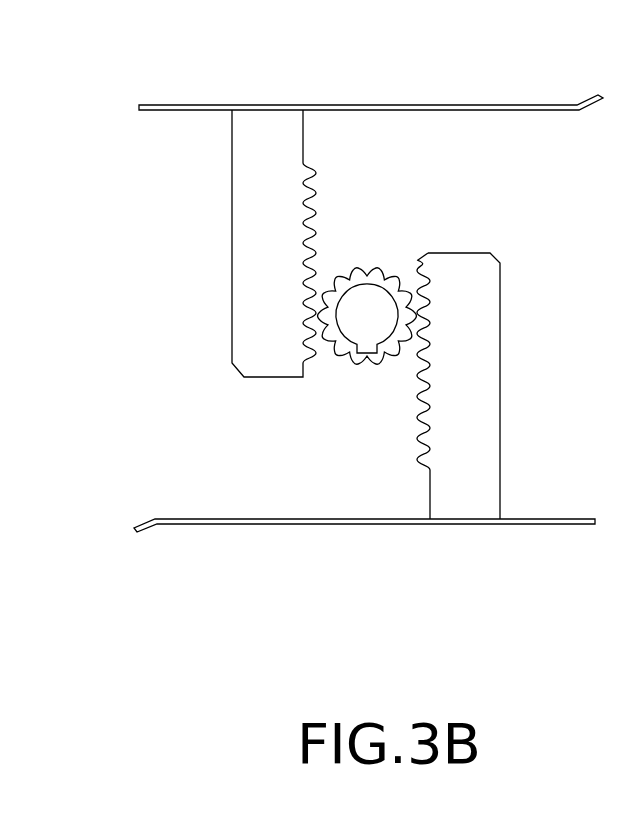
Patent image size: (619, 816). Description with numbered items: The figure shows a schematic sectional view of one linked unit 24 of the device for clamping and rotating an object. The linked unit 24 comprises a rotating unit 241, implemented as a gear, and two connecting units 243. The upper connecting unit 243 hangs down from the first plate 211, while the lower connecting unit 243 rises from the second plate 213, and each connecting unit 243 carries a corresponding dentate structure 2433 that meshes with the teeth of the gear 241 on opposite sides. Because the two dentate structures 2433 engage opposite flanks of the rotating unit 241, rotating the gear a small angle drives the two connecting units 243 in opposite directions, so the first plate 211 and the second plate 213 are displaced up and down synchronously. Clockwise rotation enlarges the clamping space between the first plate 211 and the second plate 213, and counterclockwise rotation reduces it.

The first plate 211 is at (499, 106).
The second plate 213 is at (340, 524).
The connecting unit 243 is at (370, 314).
The dentate structure 2433 is at (330, 182).
The rotating unit 241 is at (372, 263).
The linked unit 24 is at (345, 325).